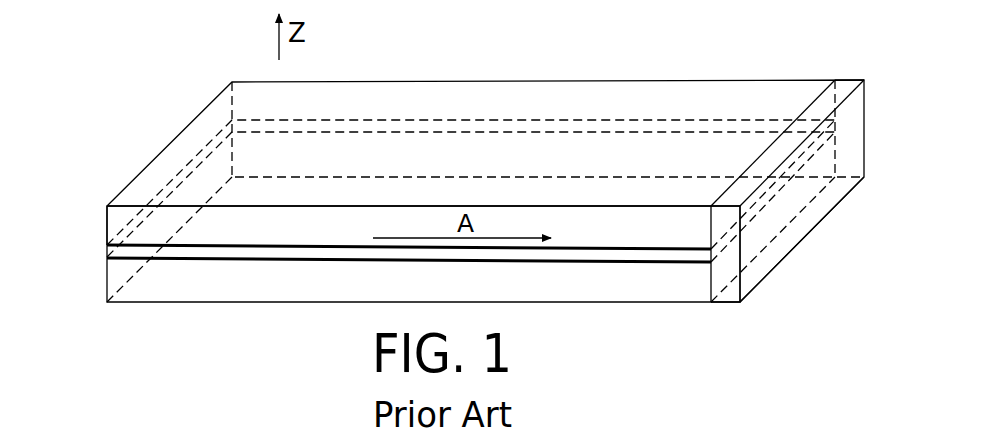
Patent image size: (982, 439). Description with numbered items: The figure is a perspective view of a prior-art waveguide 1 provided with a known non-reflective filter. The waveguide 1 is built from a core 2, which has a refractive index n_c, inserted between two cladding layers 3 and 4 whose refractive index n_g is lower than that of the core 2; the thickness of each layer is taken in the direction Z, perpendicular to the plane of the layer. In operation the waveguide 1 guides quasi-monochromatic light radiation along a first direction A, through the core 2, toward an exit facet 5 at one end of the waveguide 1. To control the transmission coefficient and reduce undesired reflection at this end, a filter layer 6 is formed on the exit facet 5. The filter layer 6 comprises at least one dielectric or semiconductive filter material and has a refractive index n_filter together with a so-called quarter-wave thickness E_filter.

The waveguide 1 is at (104, 40).
The core 2 is at (107, 248).
The cladding layer 3 is at (107, 283).
The cladding layer 4 is at (107, 223).
The exit facet 5 is at (817, 100).
The filter layer 6 is at (773, 258).